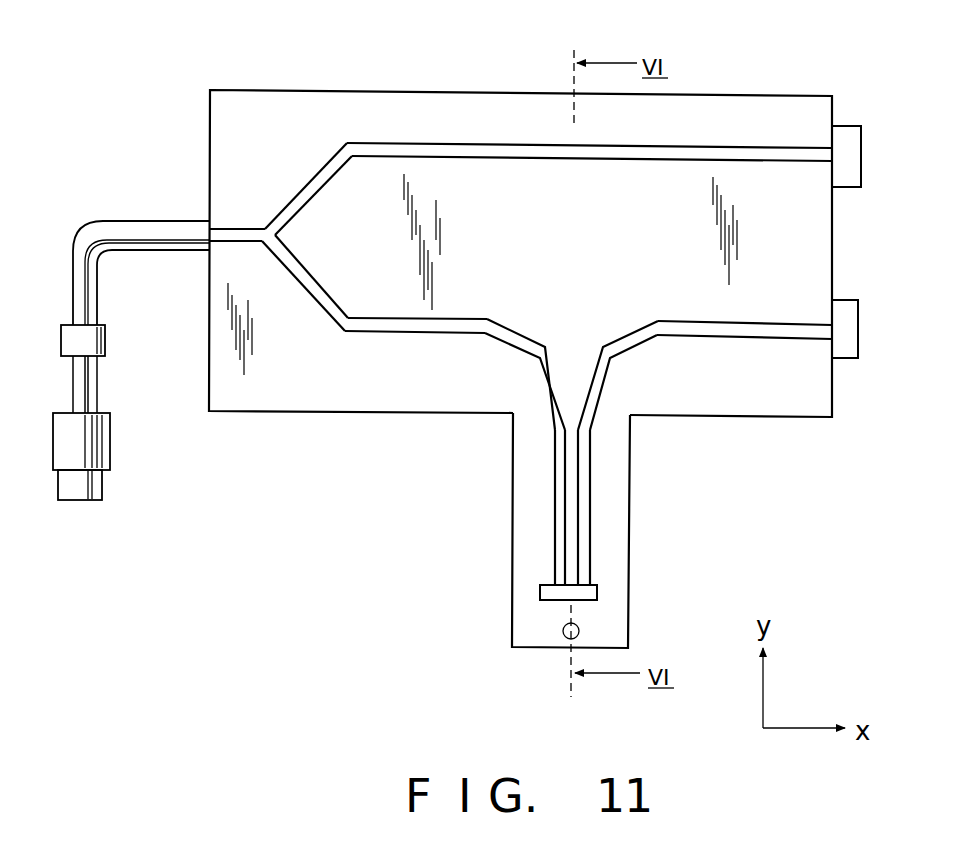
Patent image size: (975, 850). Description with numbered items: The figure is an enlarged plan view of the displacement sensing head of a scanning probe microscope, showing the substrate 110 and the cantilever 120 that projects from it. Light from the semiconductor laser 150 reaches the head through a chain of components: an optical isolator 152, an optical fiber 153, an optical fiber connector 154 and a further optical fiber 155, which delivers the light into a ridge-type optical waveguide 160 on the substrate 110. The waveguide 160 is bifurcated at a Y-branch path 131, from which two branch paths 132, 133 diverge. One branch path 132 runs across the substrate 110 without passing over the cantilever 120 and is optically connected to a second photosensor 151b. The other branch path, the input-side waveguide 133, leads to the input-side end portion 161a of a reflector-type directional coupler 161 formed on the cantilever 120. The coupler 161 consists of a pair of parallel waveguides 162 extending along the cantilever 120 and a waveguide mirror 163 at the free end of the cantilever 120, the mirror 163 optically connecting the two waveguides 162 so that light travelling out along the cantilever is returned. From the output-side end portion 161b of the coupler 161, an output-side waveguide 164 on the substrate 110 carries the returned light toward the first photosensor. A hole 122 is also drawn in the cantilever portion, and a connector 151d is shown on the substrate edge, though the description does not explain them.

The substrate 110 is at (243, 83).
The cantilever 120 is at (610, 502).
The positioning hole 122 is at (562, 633).
The Y-branch path 131 is at (262, 221).
The branch path 132 is at (340, 148).
The input-side waveguide 133 is at (315, 302).
The semiconductor laser 150 is at (97, 488).
The second photosensor 151b is at (849, 108).
The connector 151d is at (846, 310).
The optical isolator 152 is at (92, 445).
The optical fiber 153 is at (83, 388).
The optical fiber connector 154 is at (105, 335).
The optical fiber 155 is at (153, 232).
The ridge-type optical waveguide 160 is at (450, 141).
The reflector-type directional coupler 161 is at (602, 558).
The input-side end portion 161a is at (550, 347).
The output-side end portion 161b is at (613, 347).
The parallel waveguides 162 is at (583, 503).
The waveguide mirror 163 is at (542, 593).
The output-side waveguide 164 is at (776, 338).